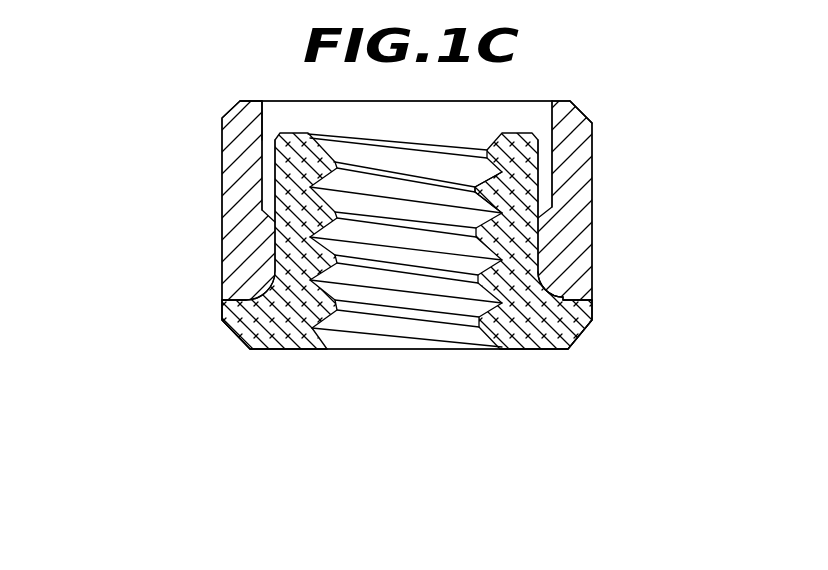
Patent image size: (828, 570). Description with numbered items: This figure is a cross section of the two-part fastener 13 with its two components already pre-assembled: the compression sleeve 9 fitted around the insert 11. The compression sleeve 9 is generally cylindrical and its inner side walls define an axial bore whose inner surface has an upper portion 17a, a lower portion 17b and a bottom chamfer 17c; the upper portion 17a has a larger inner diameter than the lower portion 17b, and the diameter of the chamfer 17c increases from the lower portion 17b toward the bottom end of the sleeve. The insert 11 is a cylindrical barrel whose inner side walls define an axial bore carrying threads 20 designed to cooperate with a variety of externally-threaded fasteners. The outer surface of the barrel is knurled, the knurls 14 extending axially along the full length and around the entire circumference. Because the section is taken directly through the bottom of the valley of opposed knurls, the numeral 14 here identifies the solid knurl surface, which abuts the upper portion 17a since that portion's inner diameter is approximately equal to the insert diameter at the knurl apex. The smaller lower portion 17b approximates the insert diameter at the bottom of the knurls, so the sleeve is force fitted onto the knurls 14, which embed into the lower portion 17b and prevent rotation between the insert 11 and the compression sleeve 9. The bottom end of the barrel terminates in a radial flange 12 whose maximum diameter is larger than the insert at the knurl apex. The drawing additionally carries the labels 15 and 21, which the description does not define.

The compression sleeve 9 is at (222, 148).
The insert 11 is at (543, 282).
The radial flange 12 is at (223, 305).
The fastener 13 is at (165, 221).
The knurls 14 is at (267, 173).
The chamfer 15 is at (580, 112).
The upper portion 17a is at (262, 114).
The lower portion 17b is at (520, 205).
The bottom chamfer 17c is at (545, 284).
The threads 20 is at (395, 328).
The lower right flange 21 is at (582, 332).